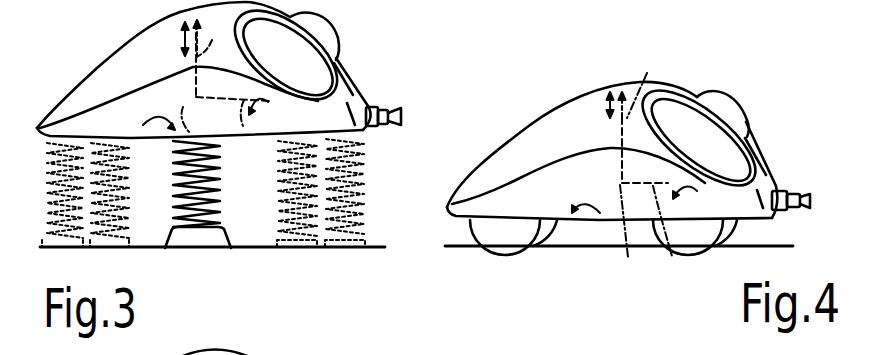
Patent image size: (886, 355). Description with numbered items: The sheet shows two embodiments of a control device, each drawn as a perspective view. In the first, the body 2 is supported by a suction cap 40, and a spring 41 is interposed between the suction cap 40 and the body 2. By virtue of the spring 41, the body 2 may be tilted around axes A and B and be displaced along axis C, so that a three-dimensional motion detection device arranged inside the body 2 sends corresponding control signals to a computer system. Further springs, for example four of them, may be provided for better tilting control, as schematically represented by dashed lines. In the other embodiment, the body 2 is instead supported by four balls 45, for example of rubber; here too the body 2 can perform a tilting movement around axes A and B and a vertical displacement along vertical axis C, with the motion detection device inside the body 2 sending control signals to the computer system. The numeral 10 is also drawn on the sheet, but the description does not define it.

In FIG. 3, the body 2 is at (103, 73).
In FIG. 4, the body 2 is at (570, 125).
In FIG. 3, the suction cap 40 is at (214, 243).
In FIG. 3, the spring 41 is at (212, 193).
In FIG. 4, the balls 45 is at (538, 232).
In FIG. 4, the vehicle 10 is at (636, 346).